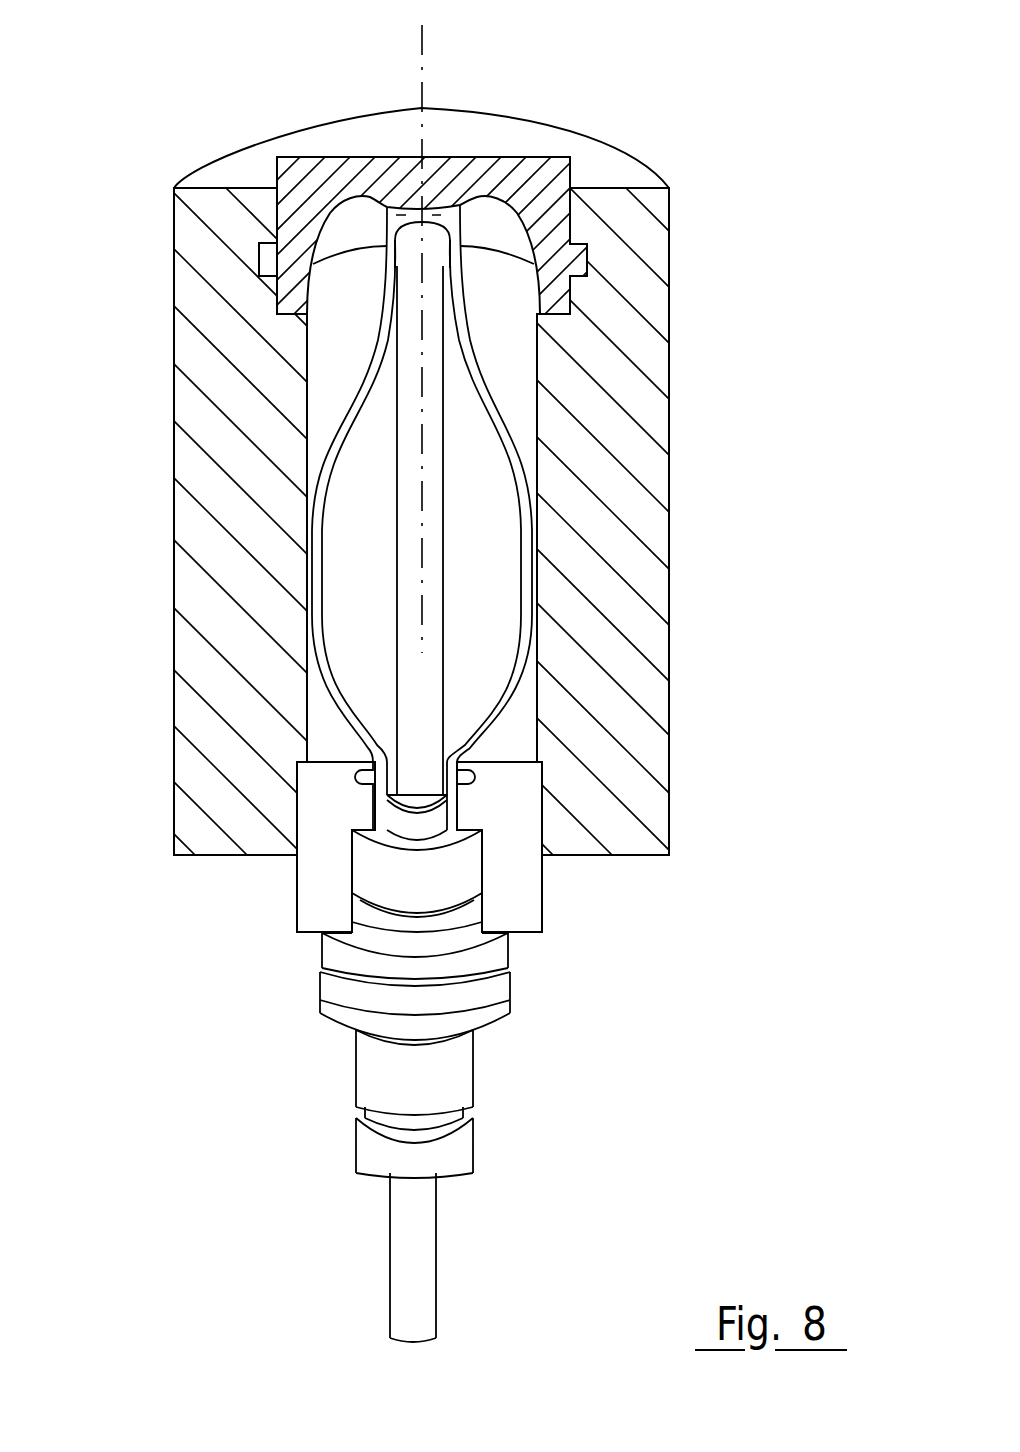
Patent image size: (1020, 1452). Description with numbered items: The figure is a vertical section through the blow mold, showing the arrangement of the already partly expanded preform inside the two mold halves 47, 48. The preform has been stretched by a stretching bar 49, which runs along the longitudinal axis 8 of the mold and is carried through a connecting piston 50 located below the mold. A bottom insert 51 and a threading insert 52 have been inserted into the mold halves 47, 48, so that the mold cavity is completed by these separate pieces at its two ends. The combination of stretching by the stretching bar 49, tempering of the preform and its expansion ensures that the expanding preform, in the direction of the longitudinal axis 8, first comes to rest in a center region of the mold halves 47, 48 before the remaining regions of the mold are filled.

The longitudinal axis 8 is at (417, 50).
The mold half 47 is at (193, 530).
The mold half 48 is at (650, 527).
The stretching bar 49 is at (438, 1241).
The connecting piston 50 is at (502, 1012).
The bottom insert 51 is at (482, 130).
The threading insert 52 is at (527, 890).